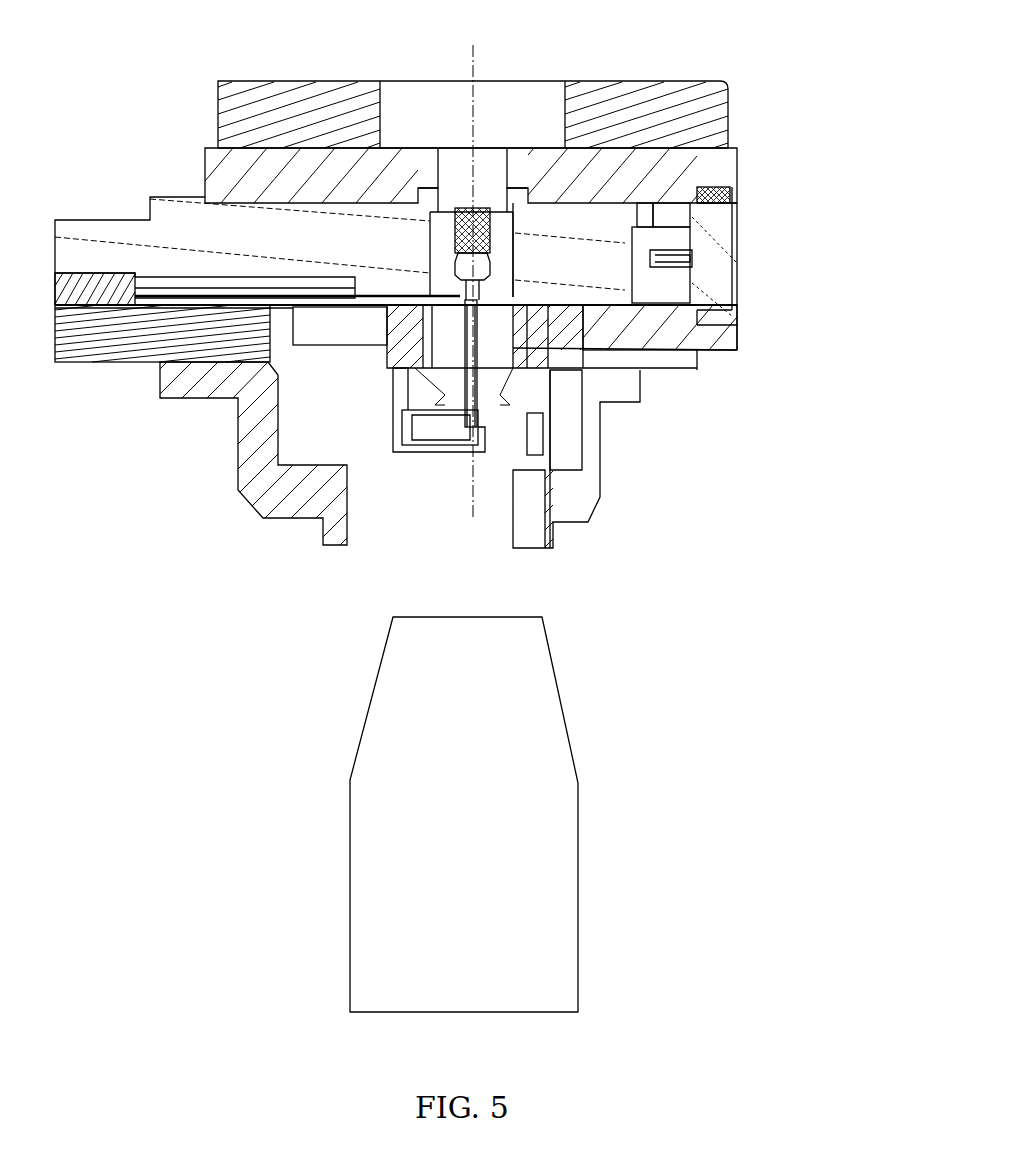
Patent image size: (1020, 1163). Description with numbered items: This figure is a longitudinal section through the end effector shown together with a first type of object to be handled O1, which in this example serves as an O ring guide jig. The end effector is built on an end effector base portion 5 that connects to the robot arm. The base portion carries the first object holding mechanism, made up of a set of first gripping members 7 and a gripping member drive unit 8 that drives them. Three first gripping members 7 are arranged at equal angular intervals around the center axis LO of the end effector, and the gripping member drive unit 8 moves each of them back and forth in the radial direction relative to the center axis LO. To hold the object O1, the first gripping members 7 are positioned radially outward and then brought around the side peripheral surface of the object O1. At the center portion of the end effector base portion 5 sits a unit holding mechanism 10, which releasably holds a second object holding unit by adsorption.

The end effector base portion 5 is at (590, 81).
The gripping member drive unit 8 is at (105, 225).
The first gripping member 7 is at (238, 467).
The unit holding mechanism 10 is at (423, 453).
The center axis LO is at (440, 520).
The first type of object to be handled O1 is at (557, 730).